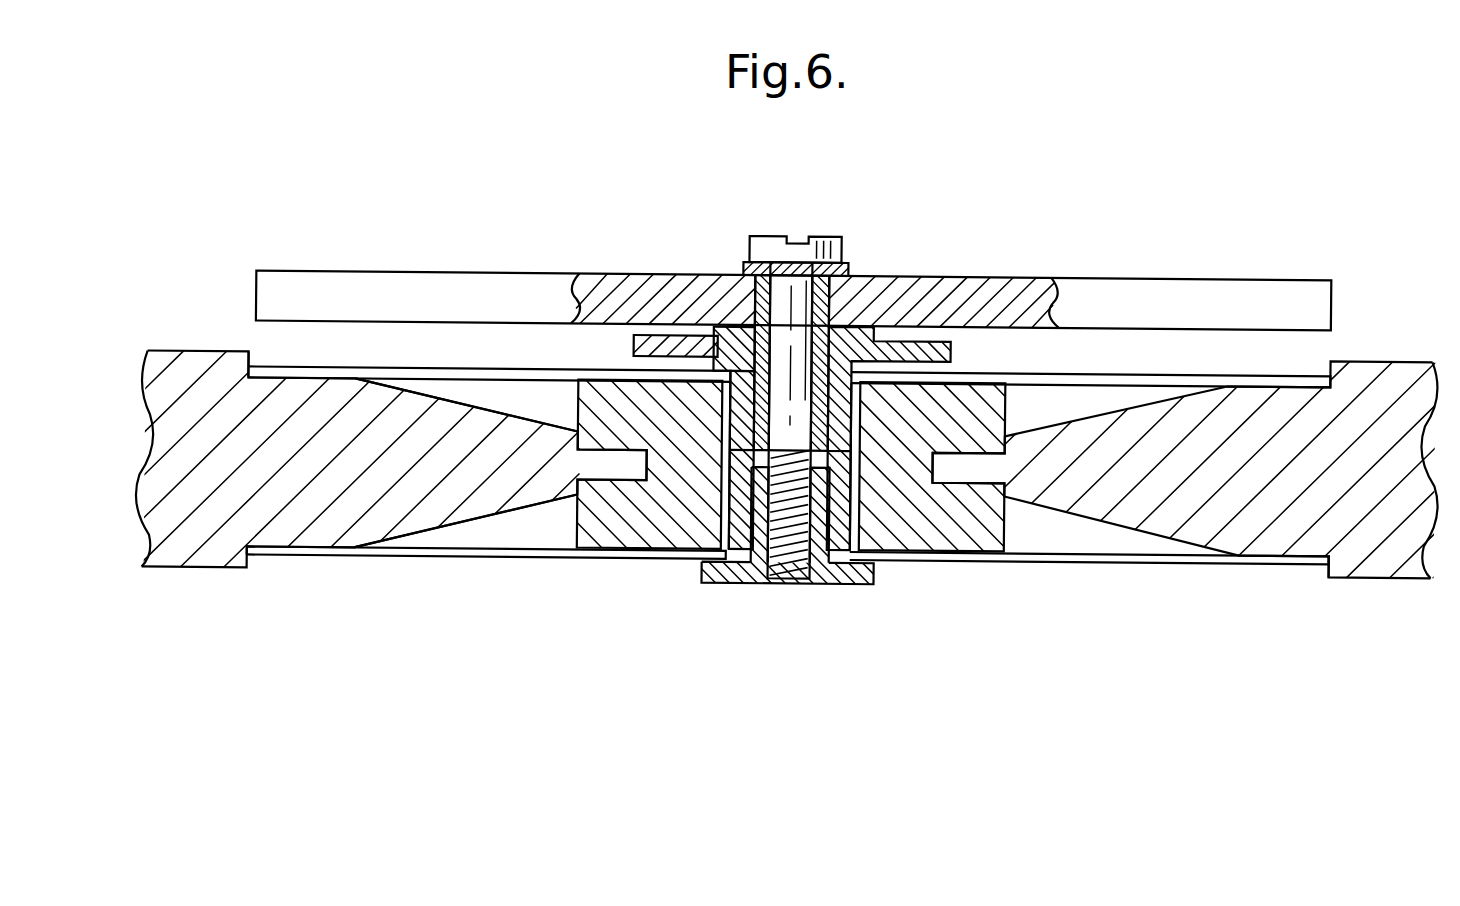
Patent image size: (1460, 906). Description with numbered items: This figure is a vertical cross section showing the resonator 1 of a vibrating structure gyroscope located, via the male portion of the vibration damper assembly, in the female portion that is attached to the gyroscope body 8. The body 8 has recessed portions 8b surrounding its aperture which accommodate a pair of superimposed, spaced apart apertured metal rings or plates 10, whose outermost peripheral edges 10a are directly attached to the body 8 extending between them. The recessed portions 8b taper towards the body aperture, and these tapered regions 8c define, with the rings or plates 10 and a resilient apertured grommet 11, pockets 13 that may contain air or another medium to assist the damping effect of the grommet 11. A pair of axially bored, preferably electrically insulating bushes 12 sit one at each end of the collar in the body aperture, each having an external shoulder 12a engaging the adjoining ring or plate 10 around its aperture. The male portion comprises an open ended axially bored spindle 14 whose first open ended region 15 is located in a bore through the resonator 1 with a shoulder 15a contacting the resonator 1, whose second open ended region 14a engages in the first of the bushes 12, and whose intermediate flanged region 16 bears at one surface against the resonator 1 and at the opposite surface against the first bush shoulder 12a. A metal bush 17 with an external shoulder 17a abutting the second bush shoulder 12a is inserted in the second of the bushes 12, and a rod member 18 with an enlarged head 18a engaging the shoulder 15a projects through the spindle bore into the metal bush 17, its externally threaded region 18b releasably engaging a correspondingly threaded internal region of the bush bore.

The resonator 1 is at (1248, 295).
The body 8 is at (172, 380).
The recessed portions 8b is at (258, 363).
The tapered regions 8c is at (453, 562).
The rings or plates 10 is at (378, 375).
The outermost peripheral edge 10a is at (262, 565).
The grommet 11 is at (630, 541).
The bushes 12 is at (842, 343).
The shoulder 12a is at (712, 300).
The pockets 13 is at (505, 542).
The spindle 14 is at (844, 298).
The second open ended region 14a is at (875, 421).
The first open ended region 15 is at (727, 278).
The shoulder 15a is at (740, 278).
The intermediate flanged region 16 is at (633, 350).
The metal bush 17 is at (820, 586).
The shoulder 17a is at (857, 586).
The rod member 18 is at (797, 290).
The enlarged head 18a is at (764, 247).
The externally threaded region 18b is at (788, 586).